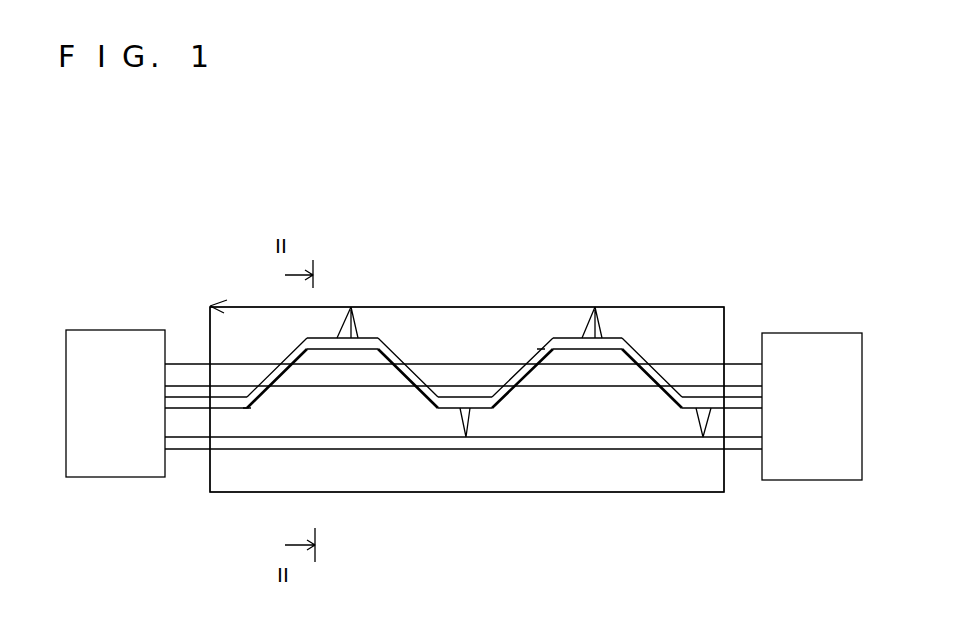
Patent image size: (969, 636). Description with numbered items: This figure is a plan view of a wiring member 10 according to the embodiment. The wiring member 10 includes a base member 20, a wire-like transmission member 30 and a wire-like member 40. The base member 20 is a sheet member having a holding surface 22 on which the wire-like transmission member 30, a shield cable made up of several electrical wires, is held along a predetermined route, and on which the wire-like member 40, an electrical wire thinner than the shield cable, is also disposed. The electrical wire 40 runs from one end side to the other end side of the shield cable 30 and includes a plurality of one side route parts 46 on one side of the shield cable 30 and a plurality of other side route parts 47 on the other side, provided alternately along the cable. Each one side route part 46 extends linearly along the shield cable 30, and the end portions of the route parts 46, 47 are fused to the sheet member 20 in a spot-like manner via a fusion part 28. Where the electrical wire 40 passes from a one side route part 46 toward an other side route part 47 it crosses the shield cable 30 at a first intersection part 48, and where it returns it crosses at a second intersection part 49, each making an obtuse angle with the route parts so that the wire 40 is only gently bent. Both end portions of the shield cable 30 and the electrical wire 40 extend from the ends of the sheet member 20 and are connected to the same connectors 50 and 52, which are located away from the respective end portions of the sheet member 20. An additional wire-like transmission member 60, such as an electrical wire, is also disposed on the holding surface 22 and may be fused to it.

The wiring member 10 is at (505, 203).
The base member 20 is at (672, 305).
The holding surface 22 is at (538, 318).
The fusion part 28 is at (351, 306).
The wire-like transmission member 30 is at (468, 364).
The wire-like member 40 is at (673, 385).
The one side route part 46 is at (307, 338).
The other side route part 47 is at (492, 407).
The first intersection part 48 is at (397, 352).
The second intersection part 49 is at (295, 366).
The connector 50 is at (117, 330).
The connector 52 is at (812, 333).
The wire-like transmission member 60 is at (550, 450).